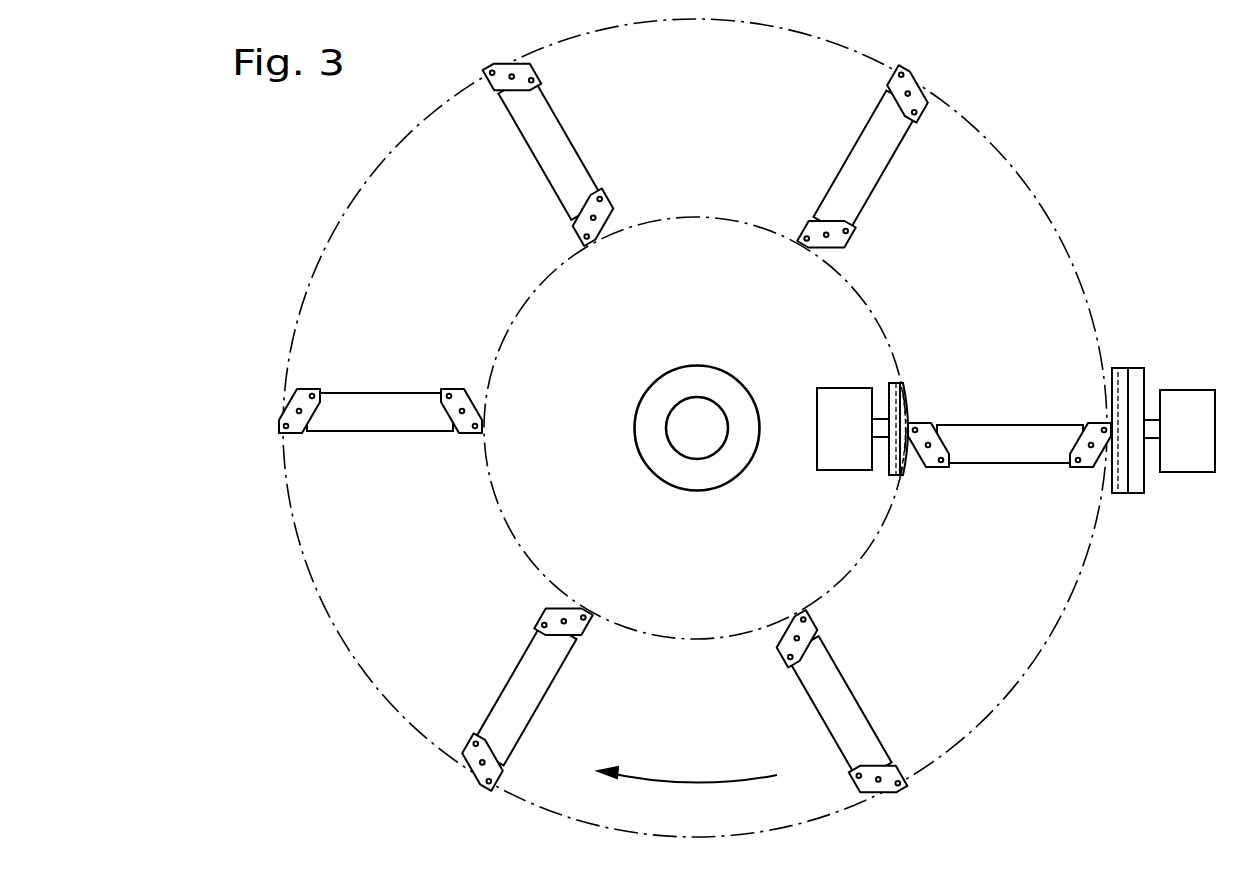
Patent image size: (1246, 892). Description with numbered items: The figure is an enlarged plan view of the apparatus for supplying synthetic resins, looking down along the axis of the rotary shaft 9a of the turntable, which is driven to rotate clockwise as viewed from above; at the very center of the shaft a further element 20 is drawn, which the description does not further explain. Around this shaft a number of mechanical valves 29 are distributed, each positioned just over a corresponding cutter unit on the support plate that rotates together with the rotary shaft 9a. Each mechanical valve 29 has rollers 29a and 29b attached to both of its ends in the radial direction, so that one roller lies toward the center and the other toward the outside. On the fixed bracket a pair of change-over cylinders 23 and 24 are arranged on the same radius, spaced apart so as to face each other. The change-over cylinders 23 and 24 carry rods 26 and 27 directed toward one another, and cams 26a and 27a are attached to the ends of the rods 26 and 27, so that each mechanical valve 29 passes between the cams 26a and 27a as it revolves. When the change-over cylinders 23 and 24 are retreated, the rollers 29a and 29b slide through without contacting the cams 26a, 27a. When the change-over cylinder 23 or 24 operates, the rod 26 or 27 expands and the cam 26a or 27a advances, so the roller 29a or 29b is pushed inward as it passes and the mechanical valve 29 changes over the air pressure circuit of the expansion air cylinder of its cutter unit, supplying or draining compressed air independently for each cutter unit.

The rotary shaft 9a is at (660, 463).
The rotary shaft 20 is at (710, 410).
The change-over cylinder 23 is at (1193, 398).
The change-over cylinder 24 is at (825, 452).
The rod 26 is at (1148, 422).
The cam 26a is at (1137, 495).
The rod 27 is at (882, 437).
The cam 27a is at (895, 385).
The mechanical valve 29 is at (1022, 460).
The roller 29a is at (1108, 427).
The roller 29b is at (920, 423).